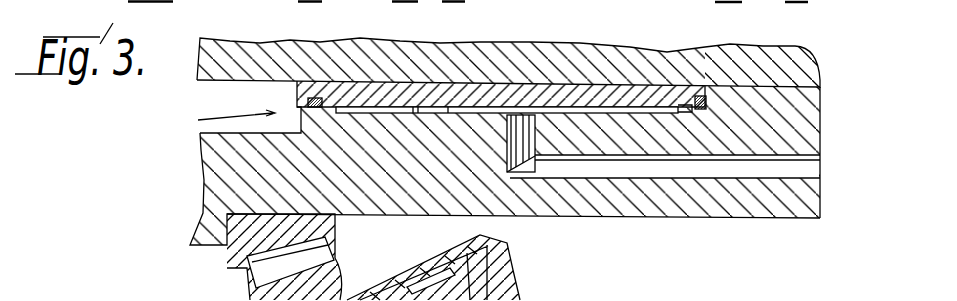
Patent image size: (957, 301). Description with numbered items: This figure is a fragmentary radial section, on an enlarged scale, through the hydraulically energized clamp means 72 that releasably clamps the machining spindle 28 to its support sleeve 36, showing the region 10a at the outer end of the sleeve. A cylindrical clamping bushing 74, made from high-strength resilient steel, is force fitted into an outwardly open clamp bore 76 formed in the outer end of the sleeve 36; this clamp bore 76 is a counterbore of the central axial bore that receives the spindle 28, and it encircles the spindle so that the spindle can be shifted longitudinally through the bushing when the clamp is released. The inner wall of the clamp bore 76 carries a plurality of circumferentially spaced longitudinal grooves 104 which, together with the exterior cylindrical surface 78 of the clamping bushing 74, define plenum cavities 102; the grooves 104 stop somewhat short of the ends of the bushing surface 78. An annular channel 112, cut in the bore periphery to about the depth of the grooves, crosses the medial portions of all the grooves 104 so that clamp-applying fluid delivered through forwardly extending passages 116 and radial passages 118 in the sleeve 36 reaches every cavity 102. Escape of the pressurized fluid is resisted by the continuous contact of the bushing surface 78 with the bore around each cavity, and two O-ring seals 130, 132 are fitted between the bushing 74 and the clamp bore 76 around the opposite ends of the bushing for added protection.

The cavity in body 10a is at (270, 87).
The spindle 28 is at (798, 52).
The sleeve 36 is at (785, 208).
The clamp means 72 is at (198, 120).
The clamping bushing 74 is at (600, 88).
The clamp bore 76 is at (680, 114).
The exterior cylindrical surface 78 is at (410, 112).
The plenum cavities 102 is at (450, 113).
The longitudinal grooves 104 is at (628, 111).
The annular channel 112 is at (535, 118).
The passages 116 is at (713, 168).
The radial passages 118 is at (537, 158).
The O-ring seal 130 is at (313, 82).
The O-ring seal 132 is at (702, 90).